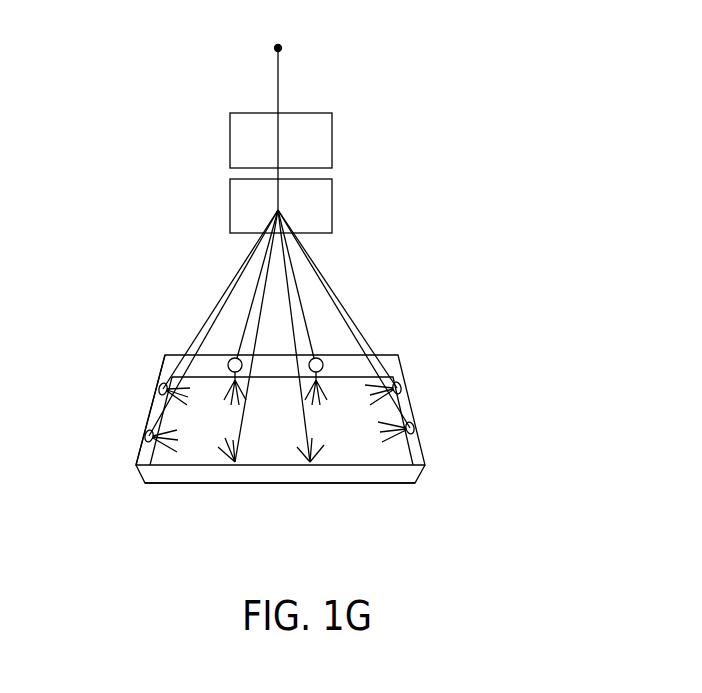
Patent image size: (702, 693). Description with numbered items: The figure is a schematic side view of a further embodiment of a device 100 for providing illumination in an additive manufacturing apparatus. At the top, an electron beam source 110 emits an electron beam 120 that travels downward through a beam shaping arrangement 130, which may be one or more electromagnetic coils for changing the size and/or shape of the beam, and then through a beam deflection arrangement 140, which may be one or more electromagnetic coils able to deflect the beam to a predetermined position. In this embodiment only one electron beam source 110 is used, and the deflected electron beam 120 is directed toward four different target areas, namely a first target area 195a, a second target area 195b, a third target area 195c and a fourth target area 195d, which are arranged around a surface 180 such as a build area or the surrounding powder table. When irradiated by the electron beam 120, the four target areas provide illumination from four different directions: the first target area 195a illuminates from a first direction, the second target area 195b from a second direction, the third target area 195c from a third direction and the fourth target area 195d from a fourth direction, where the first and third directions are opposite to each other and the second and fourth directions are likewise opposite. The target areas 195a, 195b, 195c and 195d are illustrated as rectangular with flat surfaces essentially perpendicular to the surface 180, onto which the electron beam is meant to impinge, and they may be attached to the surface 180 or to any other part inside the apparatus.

The device for providing illumination 100 is at (490, 85).
The electron beam source 110 is at (281, 46).
The electron beam 120 is at (300, 76).
The beam shaping arrangement 130 is at (322, 145).
The beam deflection arrangement 140 is at (322, 208).
The surface 180 is at (165, 419).
The first target area 195a is at (435, 395).
The second target area 195b is at (367, 473).
The third target area 195c is at (142, 453).
The fourth target area 195d is at (357, 370).